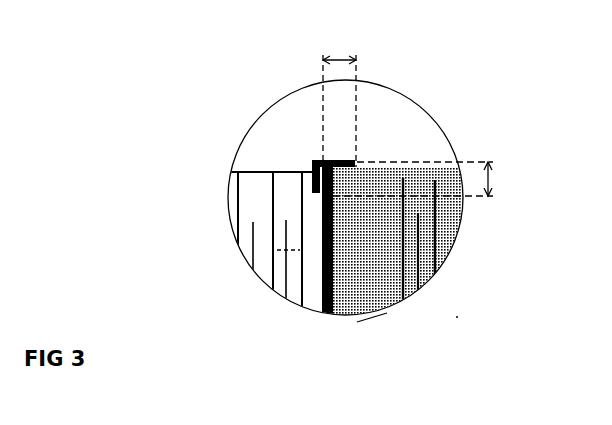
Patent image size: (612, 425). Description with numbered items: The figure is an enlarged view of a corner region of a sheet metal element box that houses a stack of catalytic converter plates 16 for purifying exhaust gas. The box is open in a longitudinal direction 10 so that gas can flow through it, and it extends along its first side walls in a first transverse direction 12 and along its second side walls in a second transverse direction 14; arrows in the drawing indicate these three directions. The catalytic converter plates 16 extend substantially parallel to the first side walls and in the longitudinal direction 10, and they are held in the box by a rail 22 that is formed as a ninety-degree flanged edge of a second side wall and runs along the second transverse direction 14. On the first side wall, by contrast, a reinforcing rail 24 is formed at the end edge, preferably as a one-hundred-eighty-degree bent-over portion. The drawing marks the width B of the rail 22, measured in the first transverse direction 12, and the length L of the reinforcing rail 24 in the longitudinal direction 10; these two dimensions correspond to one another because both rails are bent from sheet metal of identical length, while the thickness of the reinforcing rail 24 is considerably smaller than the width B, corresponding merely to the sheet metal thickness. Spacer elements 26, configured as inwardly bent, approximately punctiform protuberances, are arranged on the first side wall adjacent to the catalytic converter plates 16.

The longitudinal direction 10 is at (83, 130).
The first transverse direction 12 is at (435, 327).
The second transverse direction 14 is at (242, 327).
The catalytic converter plates 16 is at (232, 172).
The rail 22 is at (343, 162).
The reinforcing rail 24 is at (232, 172).
The spacer elements 26 is at (312, 250).
The width of the rail B is at (348, 53).
The length of the reinforcing rail L is at (490, 176).